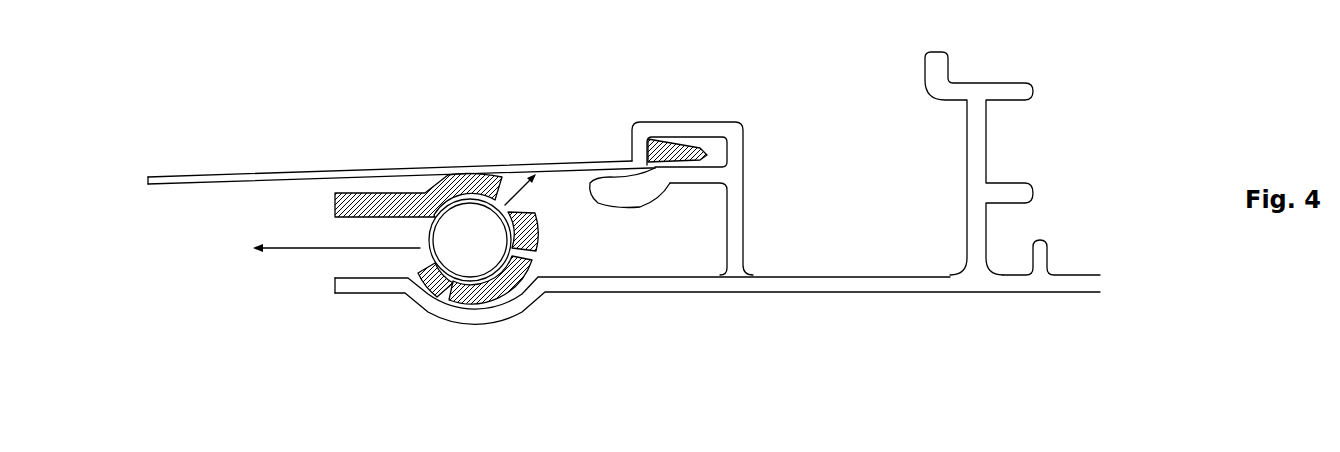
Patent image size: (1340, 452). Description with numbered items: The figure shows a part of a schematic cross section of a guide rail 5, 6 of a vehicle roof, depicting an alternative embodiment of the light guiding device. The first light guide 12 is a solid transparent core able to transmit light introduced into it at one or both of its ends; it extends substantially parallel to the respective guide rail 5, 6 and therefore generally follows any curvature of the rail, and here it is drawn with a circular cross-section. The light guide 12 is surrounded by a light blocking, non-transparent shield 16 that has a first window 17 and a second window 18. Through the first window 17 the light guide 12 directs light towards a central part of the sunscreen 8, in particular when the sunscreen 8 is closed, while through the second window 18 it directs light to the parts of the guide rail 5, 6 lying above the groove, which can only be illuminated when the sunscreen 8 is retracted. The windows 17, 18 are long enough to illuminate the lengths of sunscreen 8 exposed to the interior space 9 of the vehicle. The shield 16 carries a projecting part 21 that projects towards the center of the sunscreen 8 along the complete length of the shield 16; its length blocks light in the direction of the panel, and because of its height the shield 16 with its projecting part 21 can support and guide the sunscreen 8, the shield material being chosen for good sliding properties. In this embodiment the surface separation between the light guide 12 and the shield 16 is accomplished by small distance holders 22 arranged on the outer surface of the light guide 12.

The guide rail 5 is at (836, 305).
The guide rail 6 is at (940, 167).
The sunscreen 8 is at (168, 180).
The interior space 9 is at (180, 332).
The first light guide 12 is at (537, 265).
The shield 16 is at (483, 245).
The first window 17 is at (420, 253).
The second window 18 is at (518, 205).
The projecting part 21 is at (345, 212).
The distance holders 22 is at (450, 300).